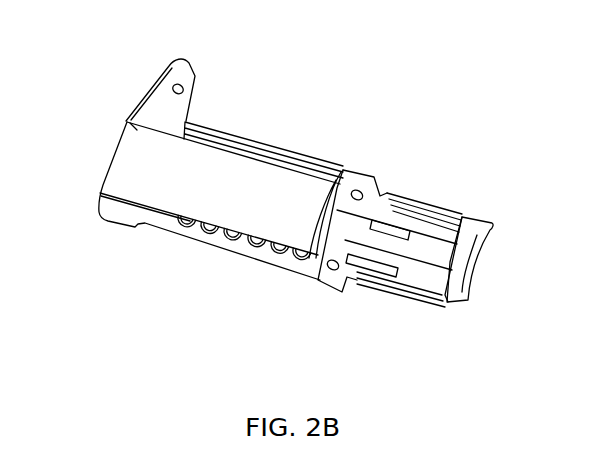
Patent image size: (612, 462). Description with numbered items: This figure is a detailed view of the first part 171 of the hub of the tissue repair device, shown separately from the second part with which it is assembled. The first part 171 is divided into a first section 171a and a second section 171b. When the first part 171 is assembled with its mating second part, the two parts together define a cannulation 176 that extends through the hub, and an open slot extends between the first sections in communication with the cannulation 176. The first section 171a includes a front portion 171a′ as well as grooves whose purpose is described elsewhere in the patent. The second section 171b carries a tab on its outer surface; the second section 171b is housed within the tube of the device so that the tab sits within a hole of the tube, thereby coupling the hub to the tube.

The first part 171 is at (263, 142).
The first section 171a is at (308, 321).
The second section 171b is at (470, 362).
The front portion 171a′ is at (166, 105).
The cannulation 176 is at (126, 162).